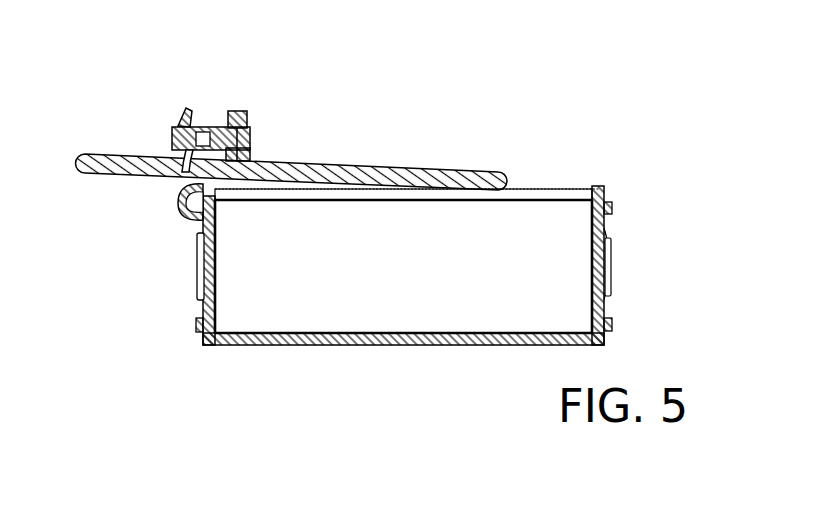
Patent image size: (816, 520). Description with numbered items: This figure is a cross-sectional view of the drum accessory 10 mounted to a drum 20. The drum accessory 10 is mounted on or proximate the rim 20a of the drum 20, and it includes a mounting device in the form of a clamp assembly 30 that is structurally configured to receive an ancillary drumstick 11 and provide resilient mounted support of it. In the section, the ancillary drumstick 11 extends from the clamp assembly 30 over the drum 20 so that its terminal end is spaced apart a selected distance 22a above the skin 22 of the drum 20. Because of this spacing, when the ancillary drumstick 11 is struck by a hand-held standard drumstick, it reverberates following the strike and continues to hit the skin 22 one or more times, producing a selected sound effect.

The drum accessory 10 is at (112, 92).
The ancillary drumstick 11 is at (398, 180).
The clamp assembly 30 is at (206, 108).
The drum 20 is at (665, 188).
The rim 20a is at (200, 206).
The skin 22 is at (425, 202).
The selected distance 22a is at (500, 195).